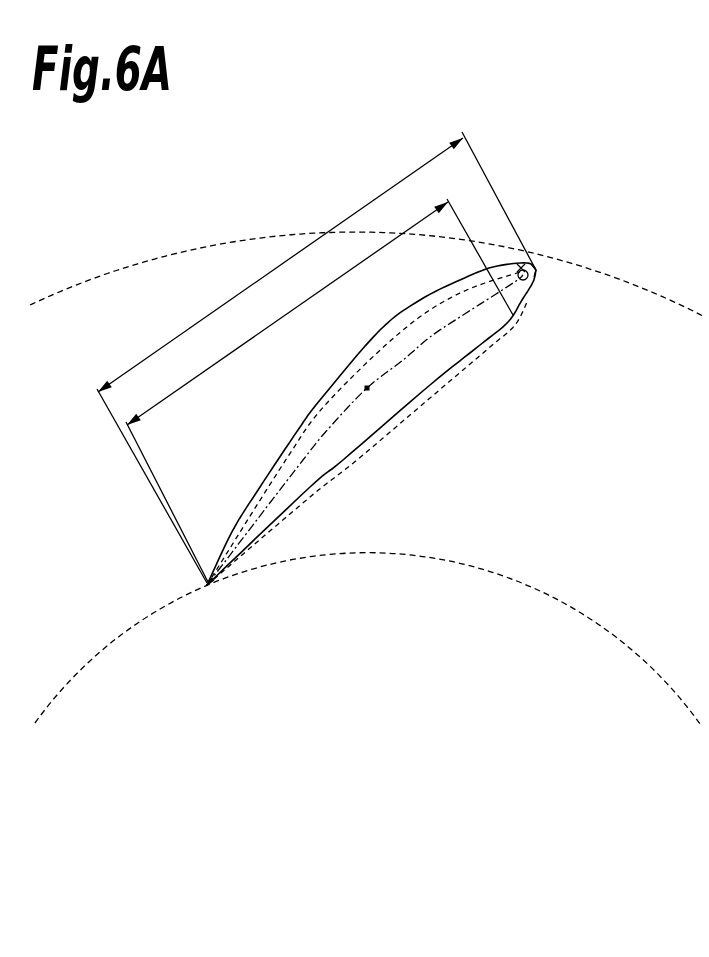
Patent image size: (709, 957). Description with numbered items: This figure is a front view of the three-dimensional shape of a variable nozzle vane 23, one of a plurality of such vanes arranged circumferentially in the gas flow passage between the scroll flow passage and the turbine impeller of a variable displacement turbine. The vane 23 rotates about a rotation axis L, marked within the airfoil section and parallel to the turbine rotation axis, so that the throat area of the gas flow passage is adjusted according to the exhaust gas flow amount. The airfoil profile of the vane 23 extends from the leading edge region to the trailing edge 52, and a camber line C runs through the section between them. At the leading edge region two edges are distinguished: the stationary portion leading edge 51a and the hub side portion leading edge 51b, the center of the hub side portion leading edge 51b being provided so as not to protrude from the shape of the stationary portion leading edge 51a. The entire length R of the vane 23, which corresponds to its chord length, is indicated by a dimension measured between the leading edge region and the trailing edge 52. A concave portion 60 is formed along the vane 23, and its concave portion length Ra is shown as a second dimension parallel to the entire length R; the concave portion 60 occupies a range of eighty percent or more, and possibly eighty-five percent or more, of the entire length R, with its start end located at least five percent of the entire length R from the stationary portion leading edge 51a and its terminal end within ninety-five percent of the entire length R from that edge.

The concave portion 60 is at (348, 331).
The trailing edge 52 is at (208, 590).
The stationary portion leading edge 51a is at (529, 278).
The hub side portion leading edge 51b is at (538, 262).
The variable nozzle vane 23 is at (502, 364).
The camber line C is at (403, 362).
The rotation axis L is at (369, 393).
The entire length R is at (316, 357).
The concave portion length Ra is at (319, 390).